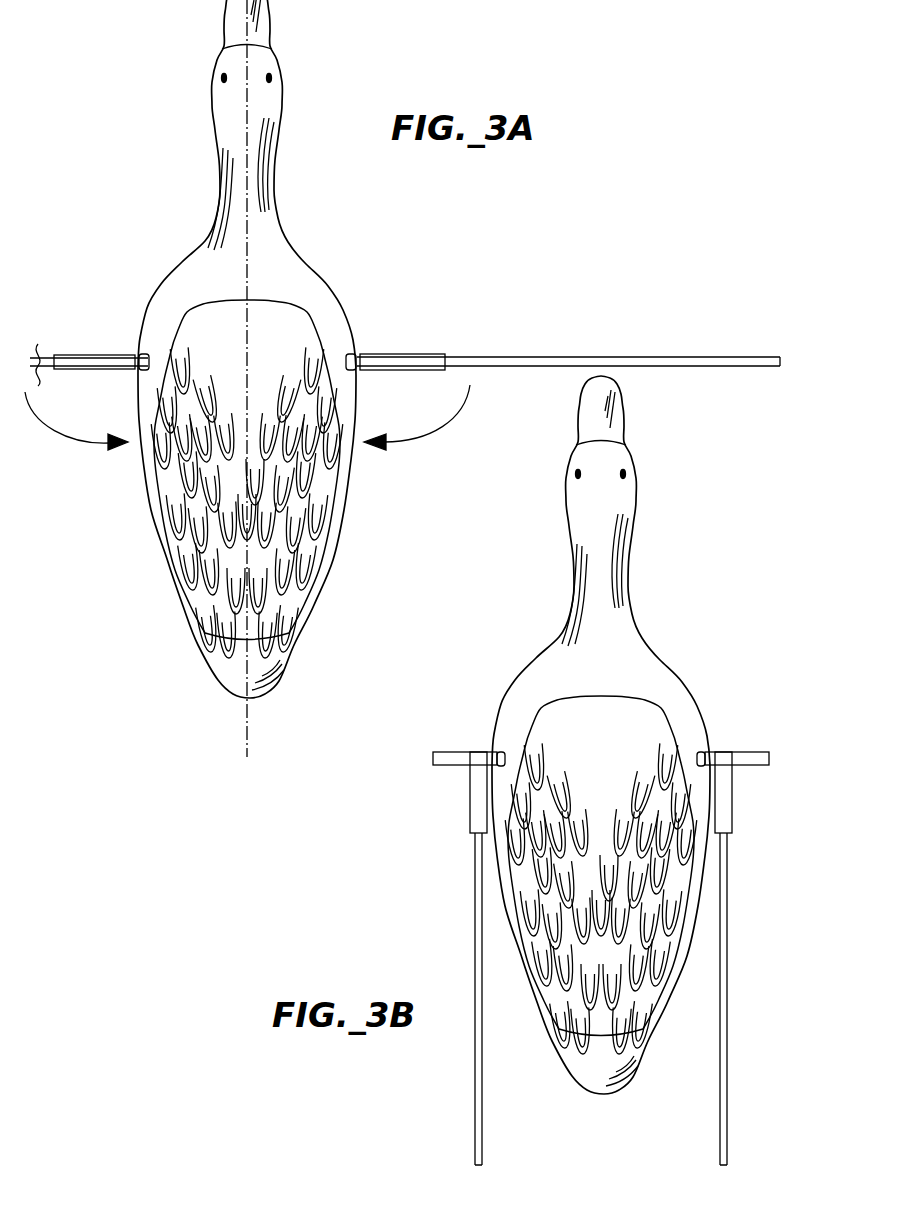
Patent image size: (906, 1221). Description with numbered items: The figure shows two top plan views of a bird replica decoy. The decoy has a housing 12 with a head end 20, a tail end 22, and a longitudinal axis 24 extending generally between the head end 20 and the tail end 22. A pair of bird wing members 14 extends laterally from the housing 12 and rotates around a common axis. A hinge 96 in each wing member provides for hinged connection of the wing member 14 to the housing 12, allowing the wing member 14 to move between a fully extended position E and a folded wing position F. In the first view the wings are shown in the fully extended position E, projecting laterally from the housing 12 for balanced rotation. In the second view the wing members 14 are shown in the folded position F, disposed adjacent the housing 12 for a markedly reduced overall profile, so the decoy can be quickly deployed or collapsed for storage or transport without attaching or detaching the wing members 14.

In FIG. 3A, the housing 12 is at (140, 490).
In FIG. 3B, the housing 12 is at (601, 735).
In FIG. 3A, the bird wing member 14 is at (42, 356).
In FIG. 3B, the bird wing member 14 is at (473, 925).
In FIG. 3A, the head end 20 is at (284, 100).
In FIG. 3B, the head end 20 is at (595, 518).
In FIG. 3A, the tail end 22 is at (306, 636).
In FIG. 3B, the tail end 22 is at (622, 1071).
In FIG. 3A, the longitudinal axis 24 is at (252, 727).
In FIG. 3A, the hinge 96 is at (378, 353).
In FIG. 3B, the hinge 96 is at (458, 752).
In FIG. 3A, the fully extended position E is at (645, 330).
In FIG. 3B, the folded wing position F is at (436, 895).